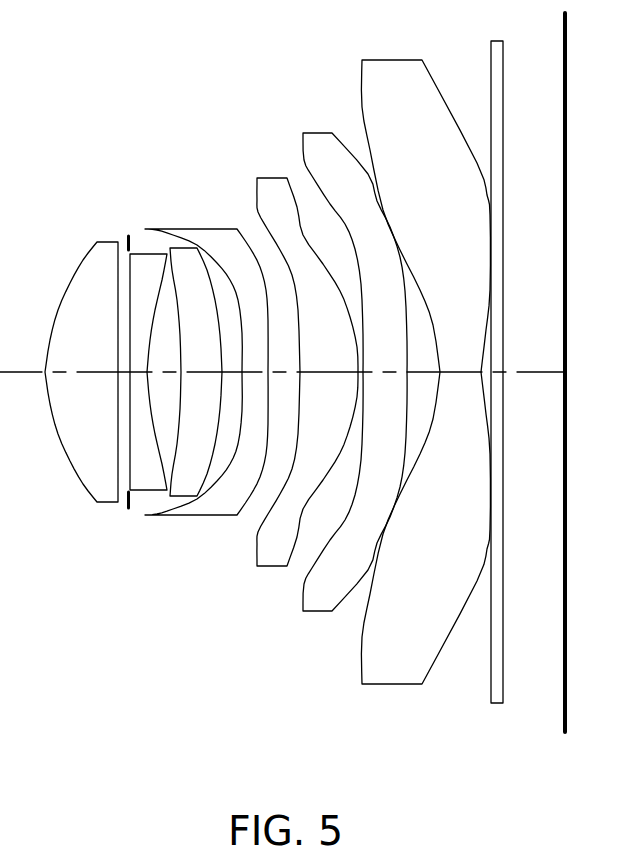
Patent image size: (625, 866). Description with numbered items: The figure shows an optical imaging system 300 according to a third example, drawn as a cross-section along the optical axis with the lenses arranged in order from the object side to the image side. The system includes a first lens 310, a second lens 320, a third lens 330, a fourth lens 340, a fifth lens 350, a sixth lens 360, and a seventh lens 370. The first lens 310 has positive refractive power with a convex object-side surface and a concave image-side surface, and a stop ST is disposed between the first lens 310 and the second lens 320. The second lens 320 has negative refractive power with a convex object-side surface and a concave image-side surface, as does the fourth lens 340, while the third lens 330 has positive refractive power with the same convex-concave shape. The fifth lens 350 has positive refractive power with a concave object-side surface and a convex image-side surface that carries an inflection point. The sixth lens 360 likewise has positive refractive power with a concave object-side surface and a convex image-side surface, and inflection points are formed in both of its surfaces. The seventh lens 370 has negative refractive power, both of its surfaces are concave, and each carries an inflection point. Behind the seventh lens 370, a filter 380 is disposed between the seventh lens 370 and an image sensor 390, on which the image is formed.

The optical imaging system 300 is at (282, 404).
The stop ST is at (136, 244).
The first lens 310 is at (108, 504).
The second lens 320 is at (147, 492).
The third lens 330 is at (185, 497).
The fourth lens 340 is at (230, 516).
The fifth lens 350 is at (268, 567).
The sixth lens 360 is at (317, 612).
The seventh lens 370 is at (388, 686).
The filter 380 is at (495, 705).
The image sensor 390 is at (562, 733).